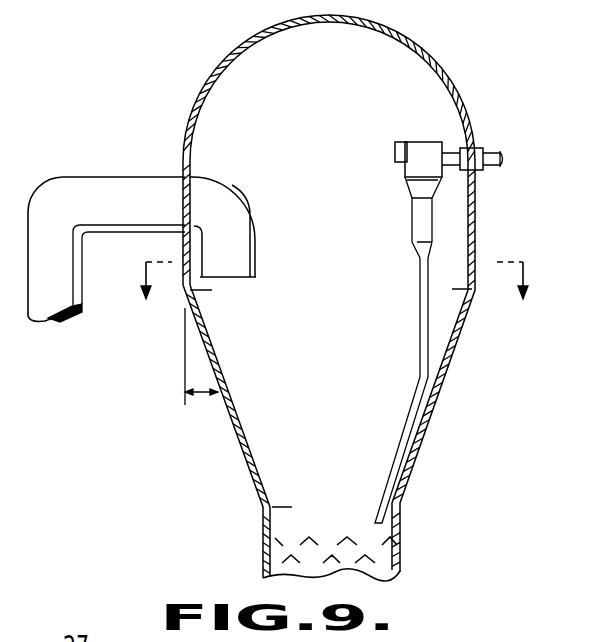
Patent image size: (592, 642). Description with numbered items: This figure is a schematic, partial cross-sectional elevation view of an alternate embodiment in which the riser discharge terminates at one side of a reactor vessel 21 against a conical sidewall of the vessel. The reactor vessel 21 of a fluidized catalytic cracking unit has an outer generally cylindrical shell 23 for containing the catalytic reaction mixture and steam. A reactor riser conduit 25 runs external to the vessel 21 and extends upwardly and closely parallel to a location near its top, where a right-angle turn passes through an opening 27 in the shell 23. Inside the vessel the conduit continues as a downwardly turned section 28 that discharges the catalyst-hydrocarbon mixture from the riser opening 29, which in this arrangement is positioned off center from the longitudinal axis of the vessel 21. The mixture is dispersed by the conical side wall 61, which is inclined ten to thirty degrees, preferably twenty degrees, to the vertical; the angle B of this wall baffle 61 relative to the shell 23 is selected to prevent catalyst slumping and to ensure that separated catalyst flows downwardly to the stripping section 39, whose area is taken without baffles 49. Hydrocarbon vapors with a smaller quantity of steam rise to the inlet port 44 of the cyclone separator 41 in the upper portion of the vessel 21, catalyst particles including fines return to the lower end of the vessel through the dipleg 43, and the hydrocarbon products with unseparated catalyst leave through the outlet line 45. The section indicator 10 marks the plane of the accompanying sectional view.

The reactor vessel 21 is at (397, 33).
The outer generally cylindrical shell 23 is at (476, 220).
The wall baffle 61 is at (240, 441).
The baffles 49 is at (350, 574).
The stripping section 39 is at (245, 537).
The opening in sidewall 27 is at (127, 178).
The reactor riser conduit 25 is at (82, 300).
The downwardly turned section 28 is at (246, 210).
The riser discharge opening 29 is at (228, 278).
The cyclone separator 41 is at (420, 146).
The inlet port 44 is at (395, 150).
The outlet line 45 is at (500, 156).
The dipleg 43 is at (427, 403).
The section line indicator 10 is at (334, 300).
The angle B is at (201, 369).